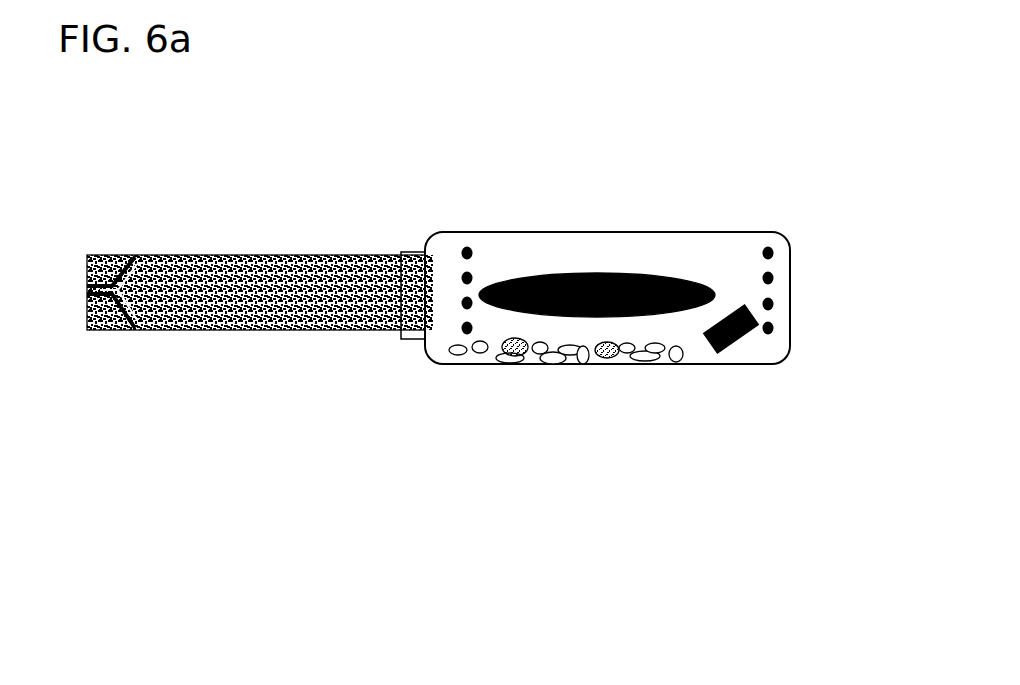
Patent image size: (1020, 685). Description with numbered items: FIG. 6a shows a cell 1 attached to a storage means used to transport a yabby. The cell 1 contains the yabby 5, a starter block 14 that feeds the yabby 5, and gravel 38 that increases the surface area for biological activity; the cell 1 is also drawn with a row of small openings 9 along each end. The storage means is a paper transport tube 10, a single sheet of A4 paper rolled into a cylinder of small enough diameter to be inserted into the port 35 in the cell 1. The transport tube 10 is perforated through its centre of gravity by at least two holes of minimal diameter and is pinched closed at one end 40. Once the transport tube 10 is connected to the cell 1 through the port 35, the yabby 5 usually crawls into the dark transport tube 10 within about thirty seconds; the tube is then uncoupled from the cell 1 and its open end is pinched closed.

The cell 1 is at (622, 203).
The yabby 5 is at (684, 255).
The openings 9 is at (467, 223).
The transport tube 10 is at (260, 303).
The starter block 14 is at (729, 364).
The port 35 is at (406, 353).
The gravel 38 is at (598, 369).
The pinched closed end 40 is at (120, 248).